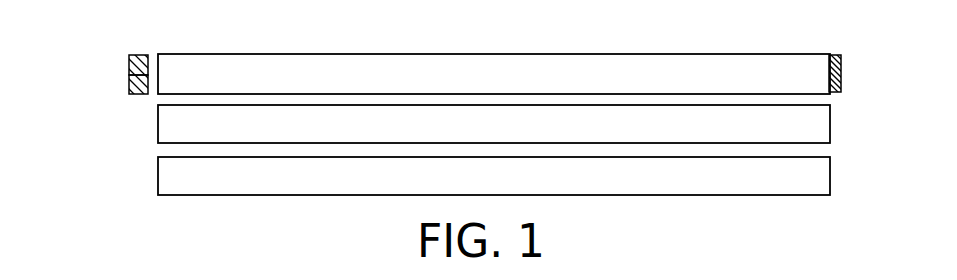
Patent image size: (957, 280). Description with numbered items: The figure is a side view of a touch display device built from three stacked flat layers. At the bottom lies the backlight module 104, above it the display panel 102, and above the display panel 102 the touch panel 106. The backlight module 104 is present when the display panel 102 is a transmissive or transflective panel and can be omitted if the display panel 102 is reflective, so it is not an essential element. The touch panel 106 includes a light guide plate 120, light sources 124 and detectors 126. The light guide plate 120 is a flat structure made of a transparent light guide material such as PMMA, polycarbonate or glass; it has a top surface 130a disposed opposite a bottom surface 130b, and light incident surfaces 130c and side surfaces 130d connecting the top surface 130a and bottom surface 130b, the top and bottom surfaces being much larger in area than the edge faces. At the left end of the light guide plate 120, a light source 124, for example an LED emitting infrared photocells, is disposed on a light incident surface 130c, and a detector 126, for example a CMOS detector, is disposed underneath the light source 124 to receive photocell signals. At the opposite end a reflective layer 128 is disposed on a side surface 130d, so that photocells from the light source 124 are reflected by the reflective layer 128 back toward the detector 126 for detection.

The light guide plate 120 is at (672, 66).
The display panel 102 is at (820, 130).
The backlight module 104 is at (820, 181).
The light source 124 is at (140, 55).
The detector 126 is at (128, 85).
The reflective layer 128 is at (843, 87).
The touch panel 106 is at (858, 72).
The top surface 130a is at (518, 54).
The bottom surface 130b is at (457, 95).
The light incident surface 130c is at (146, 64).
The side surface 130d is at (842, 72).